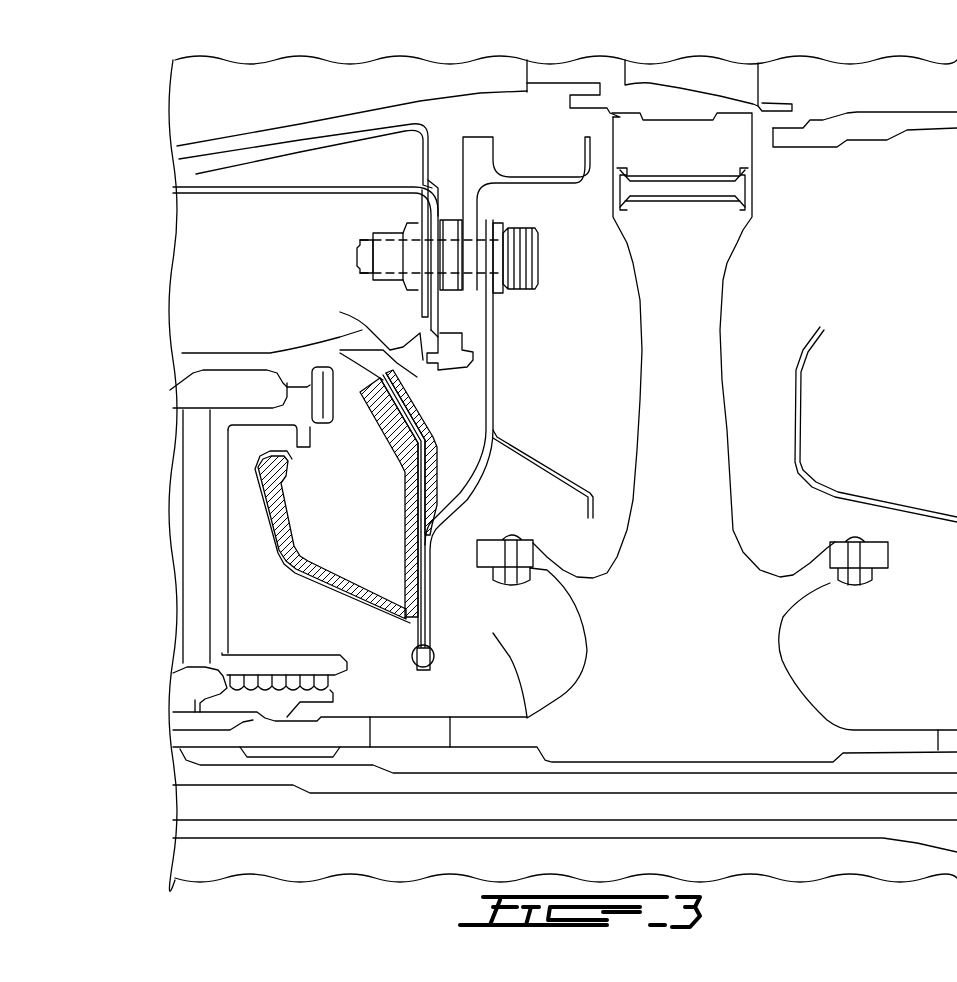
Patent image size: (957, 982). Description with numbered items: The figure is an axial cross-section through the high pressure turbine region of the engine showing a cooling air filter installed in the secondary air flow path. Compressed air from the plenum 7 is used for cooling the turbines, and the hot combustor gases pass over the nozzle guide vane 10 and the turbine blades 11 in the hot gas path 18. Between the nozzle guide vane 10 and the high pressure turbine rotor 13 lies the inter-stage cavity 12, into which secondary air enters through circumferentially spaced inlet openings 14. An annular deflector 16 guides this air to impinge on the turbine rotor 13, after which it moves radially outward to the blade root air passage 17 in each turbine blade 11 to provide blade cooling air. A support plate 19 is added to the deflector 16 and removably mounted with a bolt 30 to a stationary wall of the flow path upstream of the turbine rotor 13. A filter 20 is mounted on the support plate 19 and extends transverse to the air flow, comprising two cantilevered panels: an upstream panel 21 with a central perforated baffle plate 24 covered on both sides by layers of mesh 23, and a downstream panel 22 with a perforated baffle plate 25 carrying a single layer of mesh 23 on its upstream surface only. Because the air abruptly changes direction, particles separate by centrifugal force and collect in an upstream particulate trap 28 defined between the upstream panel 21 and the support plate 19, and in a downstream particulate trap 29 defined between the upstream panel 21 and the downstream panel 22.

The plenum 7 is at (258, 254).
The nozzle guide vane 10 is at (328, 103).
The turbine blades 11 is at (728, 78).
The inter-stage cavity 12 is at (600, 353).
The high pressure turbine rotor 13 is at (713, 680).
The inlet openings 14 is at (388, 347).
The annular deflector 16 is at (556, 176).
The blade root air passage 17 is at (675, 197).
The hot gas path 18 is at (947, 97).
The support plate 19 is at (470, 494).
The filter 20 is at (200, 504).
The upstream panel 21 is at (432, 430).
The downstream panel 22 is at (258, 467).
The mesh 23 is at (437, 447).
The perforated baffle plate 24 is at (367, 387).
The perforated baffle plate 25 is at (342, 613).
The upstream particulate trap 28 is at (472, 467).
The downstream particulate trap 29 is at (386, 575).
The bolt 30 is at (540, 260).